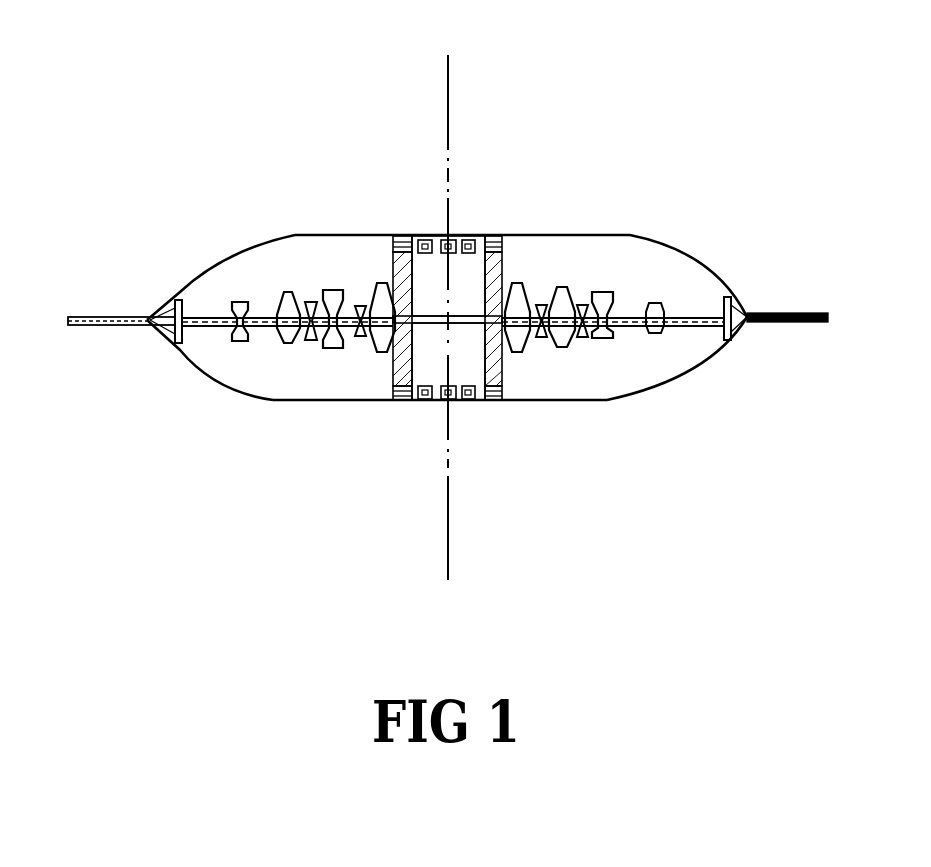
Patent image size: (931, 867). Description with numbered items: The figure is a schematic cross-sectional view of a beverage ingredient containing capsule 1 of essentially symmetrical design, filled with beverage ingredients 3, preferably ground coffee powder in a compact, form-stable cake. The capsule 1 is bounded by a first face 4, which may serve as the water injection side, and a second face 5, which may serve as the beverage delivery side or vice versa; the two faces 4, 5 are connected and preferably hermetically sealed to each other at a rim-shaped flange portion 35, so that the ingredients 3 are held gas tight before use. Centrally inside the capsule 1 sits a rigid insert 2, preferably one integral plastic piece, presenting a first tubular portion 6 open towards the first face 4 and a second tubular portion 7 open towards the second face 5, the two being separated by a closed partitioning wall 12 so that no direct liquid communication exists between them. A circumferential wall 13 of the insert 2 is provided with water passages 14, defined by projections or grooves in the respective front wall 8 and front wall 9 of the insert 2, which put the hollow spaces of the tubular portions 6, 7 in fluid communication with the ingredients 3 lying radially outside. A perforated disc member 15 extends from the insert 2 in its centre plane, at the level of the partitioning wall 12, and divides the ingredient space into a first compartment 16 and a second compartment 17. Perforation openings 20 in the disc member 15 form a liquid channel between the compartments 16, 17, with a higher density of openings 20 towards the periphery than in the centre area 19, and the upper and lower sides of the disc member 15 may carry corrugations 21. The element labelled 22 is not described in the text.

The capsule 1 is at (527, 218).
The insert 2 is at (503, 237).
The beverage ingredients 3 is at (683, 277).
The first face 4 is at (302, 235).
The second face 5 is at (348, 403).
The first tubular portion 6 is at (393, 263).
The second tubular portion 7 is at (412, 400).
The front wall 8 is at (398, 237).
The front wall 9 is at (405, 400).
The partitioning wall 12 is at (459, 325).
The circumferential wall 13 is at (502, 272).
The water passages 14 is at (467, 237).
The perforated disc member 15 is at (615, 322).
The first ingredient compartment 16 is at (257, 260).
The second ingredient compartment 17 is at (285, 387).
The centre area 19 is at (560, 340).
The perforation openings 20 is at (210, 330).
The corrugations 21 is at (242, 325).
The right end plate 22 is at (738, 307).
The rim-shaped flange portion 35 is at (795, 310).